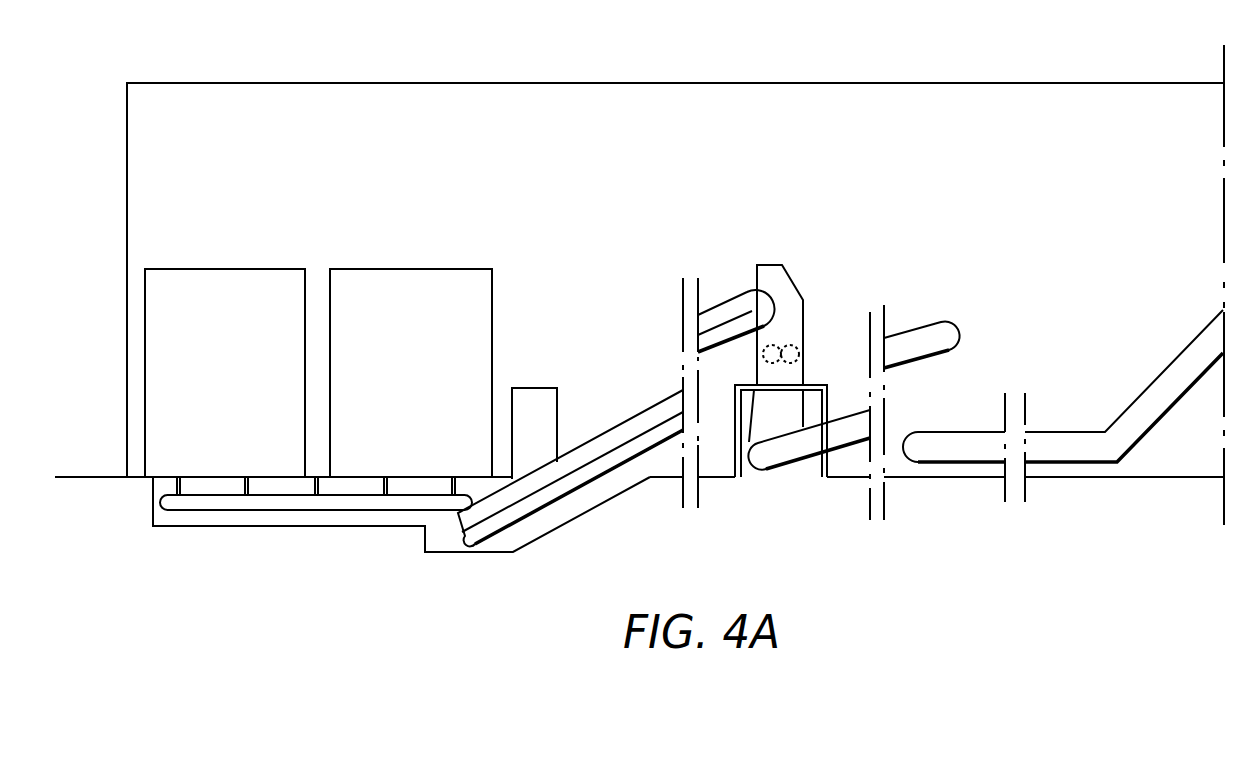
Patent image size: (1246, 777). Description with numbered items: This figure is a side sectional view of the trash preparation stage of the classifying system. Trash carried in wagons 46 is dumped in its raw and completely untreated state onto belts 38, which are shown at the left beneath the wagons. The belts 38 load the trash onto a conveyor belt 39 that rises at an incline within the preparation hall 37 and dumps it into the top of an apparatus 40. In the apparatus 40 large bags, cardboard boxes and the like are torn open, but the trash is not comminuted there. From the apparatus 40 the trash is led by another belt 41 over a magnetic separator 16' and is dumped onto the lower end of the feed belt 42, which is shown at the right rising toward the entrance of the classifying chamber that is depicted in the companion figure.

The preparation hall 37 is at (792, 113).
The wagons 46 is at (348, 278).
The belts 38 is at (292, 500).
The conveyor belt 39 is at (603, 463).
The apparatus 40 is at (783, 288).
The belt 41 is at (797, 455).
The magnetic separator 16' is at (939, 327).
The feed belt 42 is at (1097, 402).